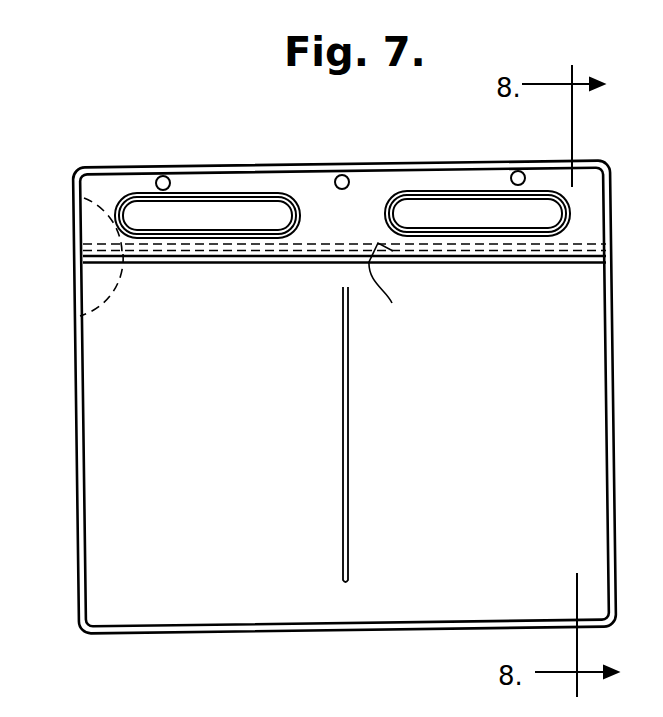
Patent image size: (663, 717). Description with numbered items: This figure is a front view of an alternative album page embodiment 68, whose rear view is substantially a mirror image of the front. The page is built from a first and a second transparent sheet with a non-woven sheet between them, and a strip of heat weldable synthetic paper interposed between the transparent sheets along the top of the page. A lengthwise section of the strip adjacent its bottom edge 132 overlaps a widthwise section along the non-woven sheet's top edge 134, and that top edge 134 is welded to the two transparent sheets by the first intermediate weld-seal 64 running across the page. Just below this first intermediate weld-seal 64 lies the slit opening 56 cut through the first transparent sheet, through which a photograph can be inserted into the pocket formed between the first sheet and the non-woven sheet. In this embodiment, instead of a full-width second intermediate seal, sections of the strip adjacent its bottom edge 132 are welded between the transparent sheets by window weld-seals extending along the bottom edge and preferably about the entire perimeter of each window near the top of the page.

The album page embodiment 68 is at (127, 163).
The slit opening 56 is at (157, 265).
The first intermediate weld-seal 64 is at (389, 286).
The bottom edge of synthetic paper strip 132 is at (82, 197).
The top edge of non-woven sheet 134 is at (80, 318).